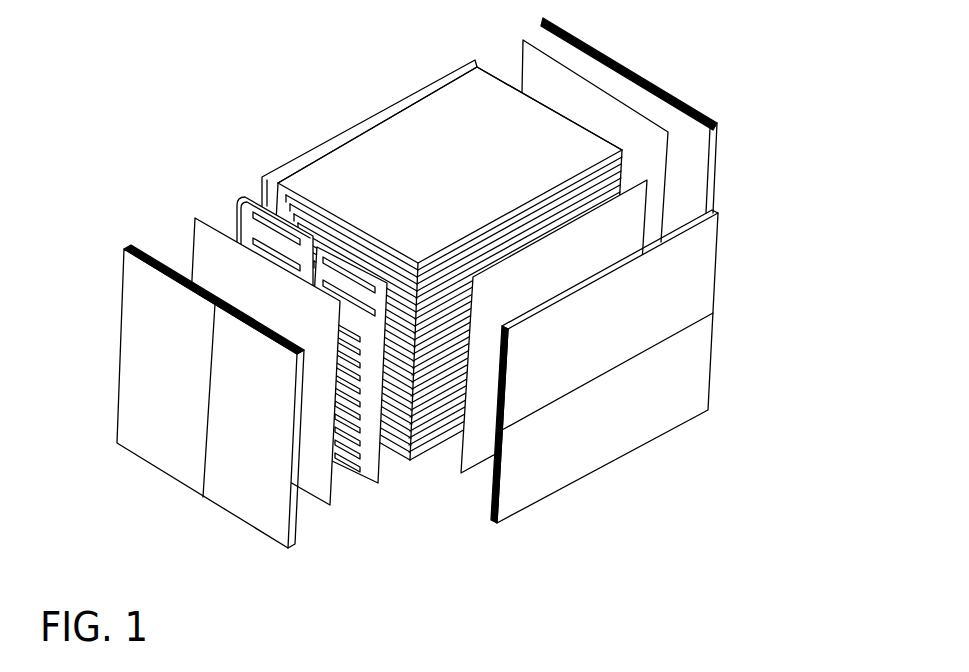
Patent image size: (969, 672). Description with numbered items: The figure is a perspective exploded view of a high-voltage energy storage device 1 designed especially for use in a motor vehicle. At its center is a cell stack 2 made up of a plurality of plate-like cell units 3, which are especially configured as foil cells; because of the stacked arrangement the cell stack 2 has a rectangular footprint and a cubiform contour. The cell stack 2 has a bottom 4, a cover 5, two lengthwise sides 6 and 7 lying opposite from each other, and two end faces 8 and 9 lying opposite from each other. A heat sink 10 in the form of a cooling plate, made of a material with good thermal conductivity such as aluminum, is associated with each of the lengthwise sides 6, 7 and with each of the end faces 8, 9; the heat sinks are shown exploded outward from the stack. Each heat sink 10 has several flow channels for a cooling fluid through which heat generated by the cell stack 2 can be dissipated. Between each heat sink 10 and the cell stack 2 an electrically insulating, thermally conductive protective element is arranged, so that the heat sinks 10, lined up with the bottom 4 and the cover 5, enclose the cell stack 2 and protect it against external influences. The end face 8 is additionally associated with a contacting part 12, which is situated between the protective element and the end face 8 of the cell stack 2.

The energy storage device 1 is at (144, 76).
The cell stack 2 is at (516, 134).
The cell units 3 is at (435, 430).
The bottom 4 is at (450, 456).
The cover 5 is at (466, 87).
The lengthwise side 6 is at (322, 126).
The lengthwise side 7 is at (634, 471).
The end face 8 is at (217, 196).
The end face 9 is at (686, 83).
The heat sink 10 is at (372, 118).
The contacting part 12 is at (367, 473).